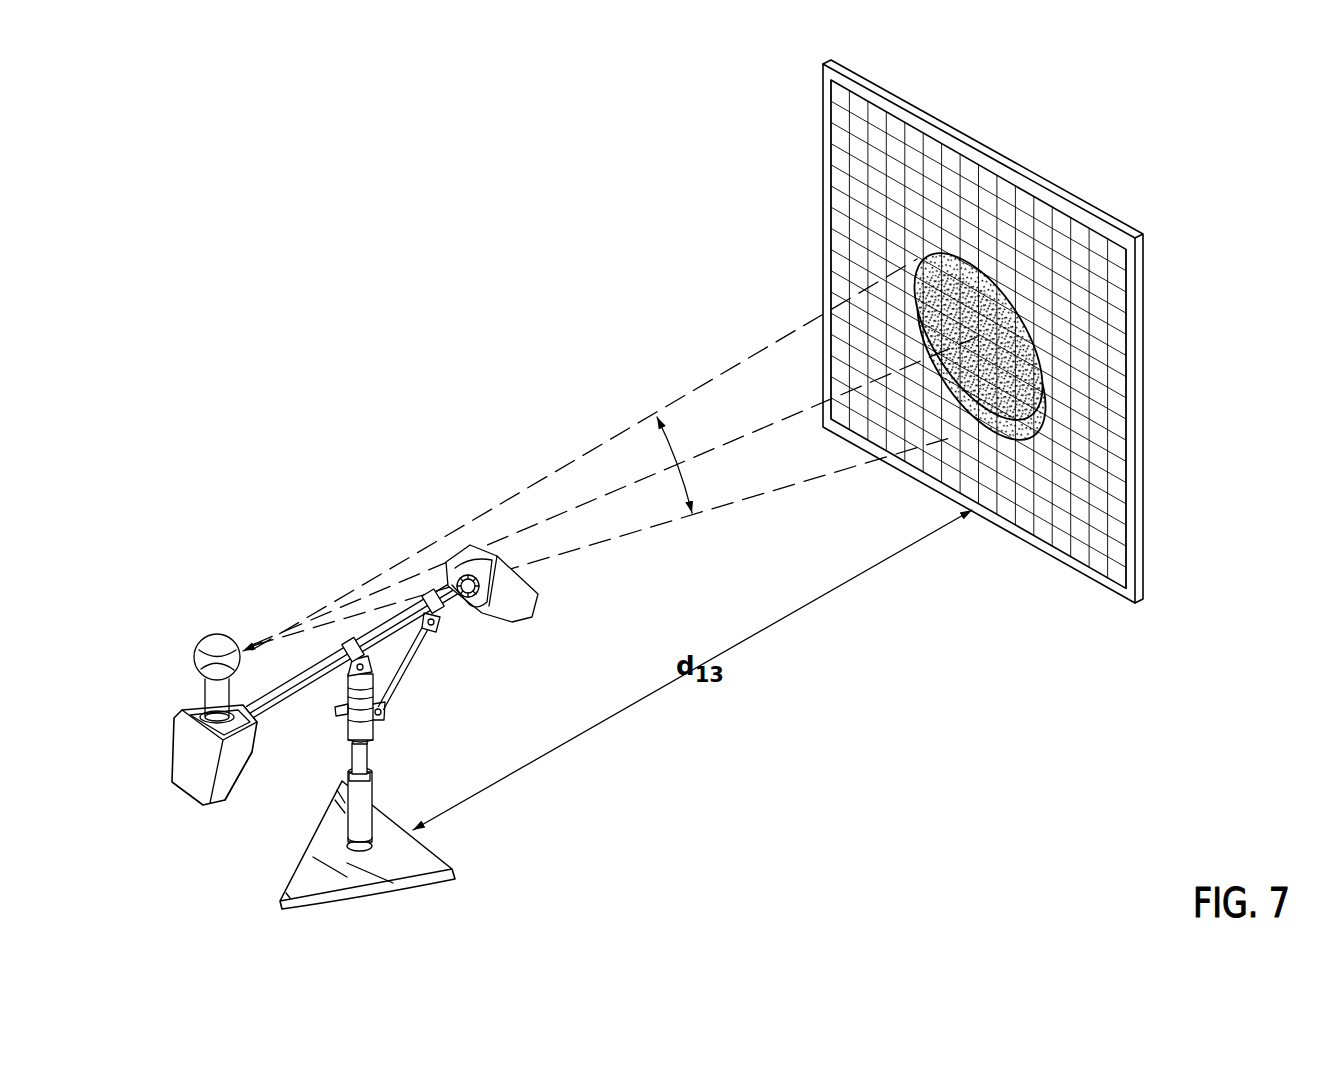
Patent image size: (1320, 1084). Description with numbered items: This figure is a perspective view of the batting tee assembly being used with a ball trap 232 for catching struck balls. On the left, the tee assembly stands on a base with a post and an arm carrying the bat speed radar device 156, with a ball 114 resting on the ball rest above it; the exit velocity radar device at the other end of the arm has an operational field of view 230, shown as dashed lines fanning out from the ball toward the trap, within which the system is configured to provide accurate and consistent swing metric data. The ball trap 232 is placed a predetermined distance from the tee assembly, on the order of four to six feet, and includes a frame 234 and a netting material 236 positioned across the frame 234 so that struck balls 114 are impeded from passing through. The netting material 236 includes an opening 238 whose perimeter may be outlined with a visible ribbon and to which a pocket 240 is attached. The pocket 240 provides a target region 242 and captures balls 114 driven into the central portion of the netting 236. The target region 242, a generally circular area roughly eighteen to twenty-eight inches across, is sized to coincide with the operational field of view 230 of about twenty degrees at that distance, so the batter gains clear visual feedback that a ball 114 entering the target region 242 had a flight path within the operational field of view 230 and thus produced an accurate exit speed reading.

The ball 114 is at (220, 640).
The bat speed radar device 156 is at (178, 739).
The operational field of view 230 is at (693, 481).
The ball trap 232 is at (1101, 214).
The frame 234 is at (1141, 288).
The netting material 236 is at (1060, 485).
The opening 238 is at (1028, 315).
The pocket 240 is at (1043, 420).
The target region 242 is at (1003, 362).